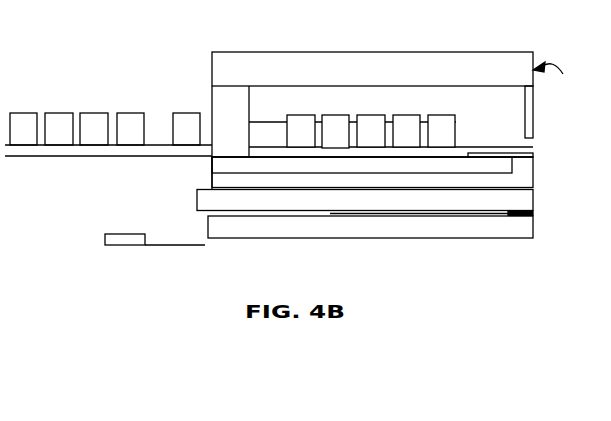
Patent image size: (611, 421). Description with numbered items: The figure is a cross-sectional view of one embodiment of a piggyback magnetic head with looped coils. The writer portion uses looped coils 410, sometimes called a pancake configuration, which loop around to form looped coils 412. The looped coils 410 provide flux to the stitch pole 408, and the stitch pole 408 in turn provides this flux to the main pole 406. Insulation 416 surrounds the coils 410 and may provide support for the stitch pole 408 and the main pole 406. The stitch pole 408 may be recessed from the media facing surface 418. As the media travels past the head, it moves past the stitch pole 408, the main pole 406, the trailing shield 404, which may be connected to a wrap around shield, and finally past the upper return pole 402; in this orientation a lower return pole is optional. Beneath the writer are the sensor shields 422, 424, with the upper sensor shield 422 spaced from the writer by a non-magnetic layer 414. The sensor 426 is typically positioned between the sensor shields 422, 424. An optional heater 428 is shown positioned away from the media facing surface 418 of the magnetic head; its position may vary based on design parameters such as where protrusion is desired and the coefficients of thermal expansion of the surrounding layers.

The upper return pole 402 is at (447, 52).
The trailing shield 404 is at (534, 119).
The main pole 406 is at (534, 153).
The stitch pole 408 is at (222, 166).
The looped coils 410 is at (337, 115).
The looped coils 412 is at (15, 113).
The non-magnetic layer 414 is at (531, 178).
The insulation 416 is at (503, 122).
The media facing surface 418 is at (559, 78).
The upper sensor shield 422 is at (196, 200).
The sensor shield 424 is at (208, 222).
The sensor 426 is at (526, 212).
The heater 428 is at (126, 234).